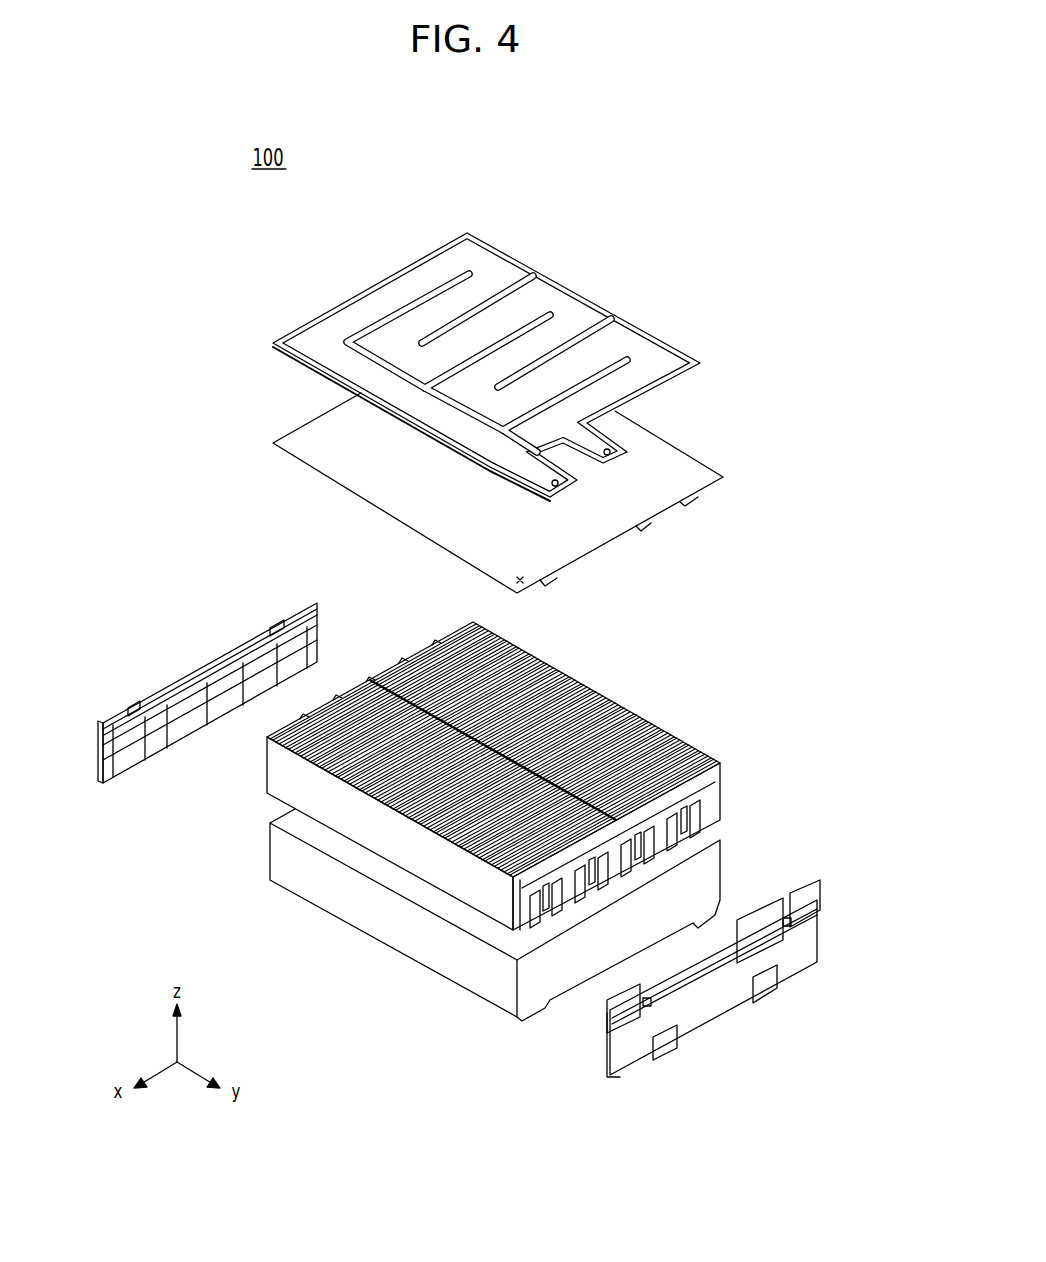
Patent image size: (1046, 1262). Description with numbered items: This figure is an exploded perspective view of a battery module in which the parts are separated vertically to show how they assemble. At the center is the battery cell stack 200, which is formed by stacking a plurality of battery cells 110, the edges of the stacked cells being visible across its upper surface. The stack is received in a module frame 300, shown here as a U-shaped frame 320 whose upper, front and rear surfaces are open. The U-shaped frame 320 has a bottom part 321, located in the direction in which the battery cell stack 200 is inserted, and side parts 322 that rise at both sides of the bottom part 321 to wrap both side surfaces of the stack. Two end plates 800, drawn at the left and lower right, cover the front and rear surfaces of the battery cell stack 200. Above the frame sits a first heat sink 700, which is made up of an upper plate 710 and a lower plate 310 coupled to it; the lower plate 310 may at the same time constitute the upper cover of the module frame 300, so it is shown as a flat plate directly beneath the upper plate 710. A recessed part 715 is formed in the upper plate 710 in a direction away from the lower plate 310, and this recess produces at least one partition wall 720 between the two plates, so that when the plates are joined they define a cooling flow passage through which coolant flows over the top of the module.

The battery cells 110 is at (493, 776).
The battery cell stack 200 is at (495, 776).
The module frame 300 is at (782, 577).
The lower plate 310 is at (498, 493).
The U-shaped frame 320 is at (546, 940).
The bottom part 321 is at (408, 919).
The side parts 322 is at (581, 956).
The first heat sink 700 is at (491, 355).
The upper plate 710 is at (486, 355).
The recessed part 715 is at (679, 320).
The partition wall 720 is at (487, 331).
The end plates 800 is at (459, 837).